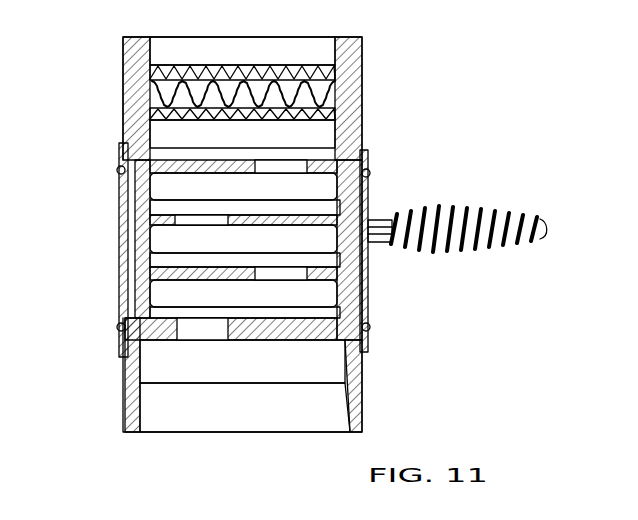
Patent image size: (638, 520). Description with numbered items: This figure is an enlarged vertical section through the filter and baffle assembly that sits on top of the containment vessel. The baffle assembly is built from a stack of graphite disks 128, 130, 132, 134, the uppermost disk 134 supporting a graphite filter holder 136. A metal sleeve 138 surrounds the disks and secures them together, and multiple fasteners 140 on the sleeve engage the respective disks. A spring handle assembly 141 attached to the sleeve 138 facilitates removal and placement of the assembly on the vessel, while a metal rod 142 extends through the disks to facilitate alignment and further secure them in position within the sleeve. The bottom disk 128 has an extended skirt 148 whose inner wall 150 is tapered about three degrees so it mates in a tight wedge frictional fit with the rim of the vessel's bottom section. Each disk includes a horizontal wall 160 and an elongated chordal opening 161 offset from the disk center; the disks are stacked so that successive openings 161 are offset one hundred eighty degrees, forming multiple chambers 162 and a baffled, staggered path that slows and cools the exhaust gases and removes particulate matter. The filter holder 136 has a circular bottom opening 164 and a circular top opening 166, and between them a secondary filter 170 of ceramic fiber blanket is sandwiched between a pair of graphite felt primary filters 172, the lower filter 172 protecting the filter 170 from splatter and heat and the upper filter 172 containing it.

The bottom disk 128 is at (367, 368).
The disk 130 is at (365, 272).
The disk 132 is at (356, 213).
The disk 134 is at (368, 152).
The filter holder 136 is at (362, 114).
The metal sleeve 138 is at (120, 272).
The fasteners 140 is at (120, 327).
The spring handle assembly 141 is at (493, 208).
The metal rod 142 is at (133, 217).
The extended skirt 148 is at (365, 403).
The inner wall 150 is at (353, 413).
The horizontal wall 160 is at (220, 172).
The elongated opening 161 is at (283, 168).
The chambers 162 is at (212, 194).
The circular bottom opening 164 is at (270, 137).
The circular top opening 166 is at (270, 59).
The secondary filter 170 is at (343, 88).
The primary filters 172 is at (148, 74).